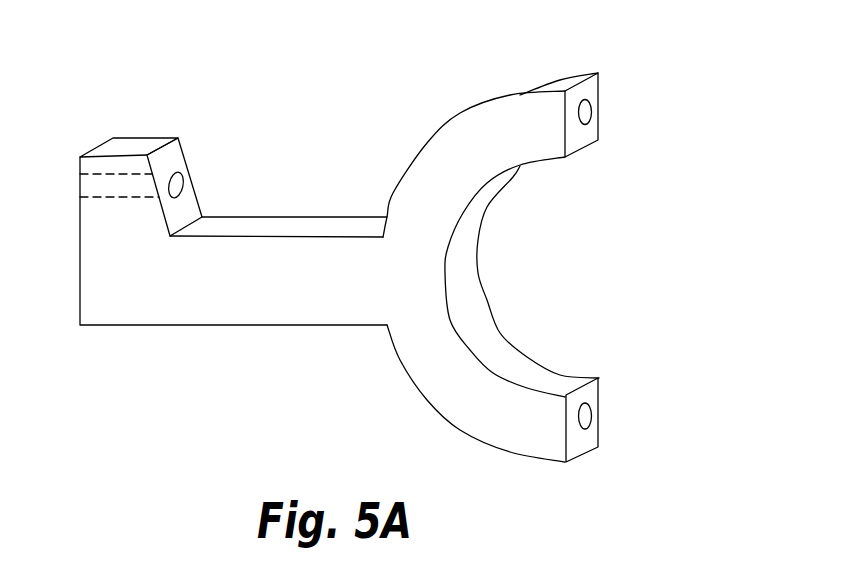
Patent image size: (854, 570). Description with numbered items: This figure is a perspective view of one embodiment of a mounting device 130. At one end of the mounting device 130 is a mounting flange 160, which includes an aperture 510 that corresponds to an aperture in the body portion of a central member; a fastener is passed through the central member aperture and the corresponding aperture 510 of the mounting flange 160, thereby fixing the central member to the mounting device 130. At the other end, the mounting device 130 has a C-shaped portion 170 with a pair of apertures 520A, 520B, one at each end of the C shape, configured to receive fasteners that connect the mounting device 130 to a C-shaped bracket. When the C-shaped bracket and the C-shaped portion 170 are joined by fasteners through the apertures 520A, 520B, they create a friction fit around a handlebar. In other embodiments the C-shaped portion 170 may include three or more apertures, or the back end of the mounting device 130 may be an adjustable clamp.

The mounting device 130 is at (288, 80).
The mounting flange 160 is at (122, 142).
The aperture 510 is at (177, 186).
The C-shaped portion 170 is at (460, 128).
The aperture 520A is at (587, 110).
The aperture 520B is at (587, 416).